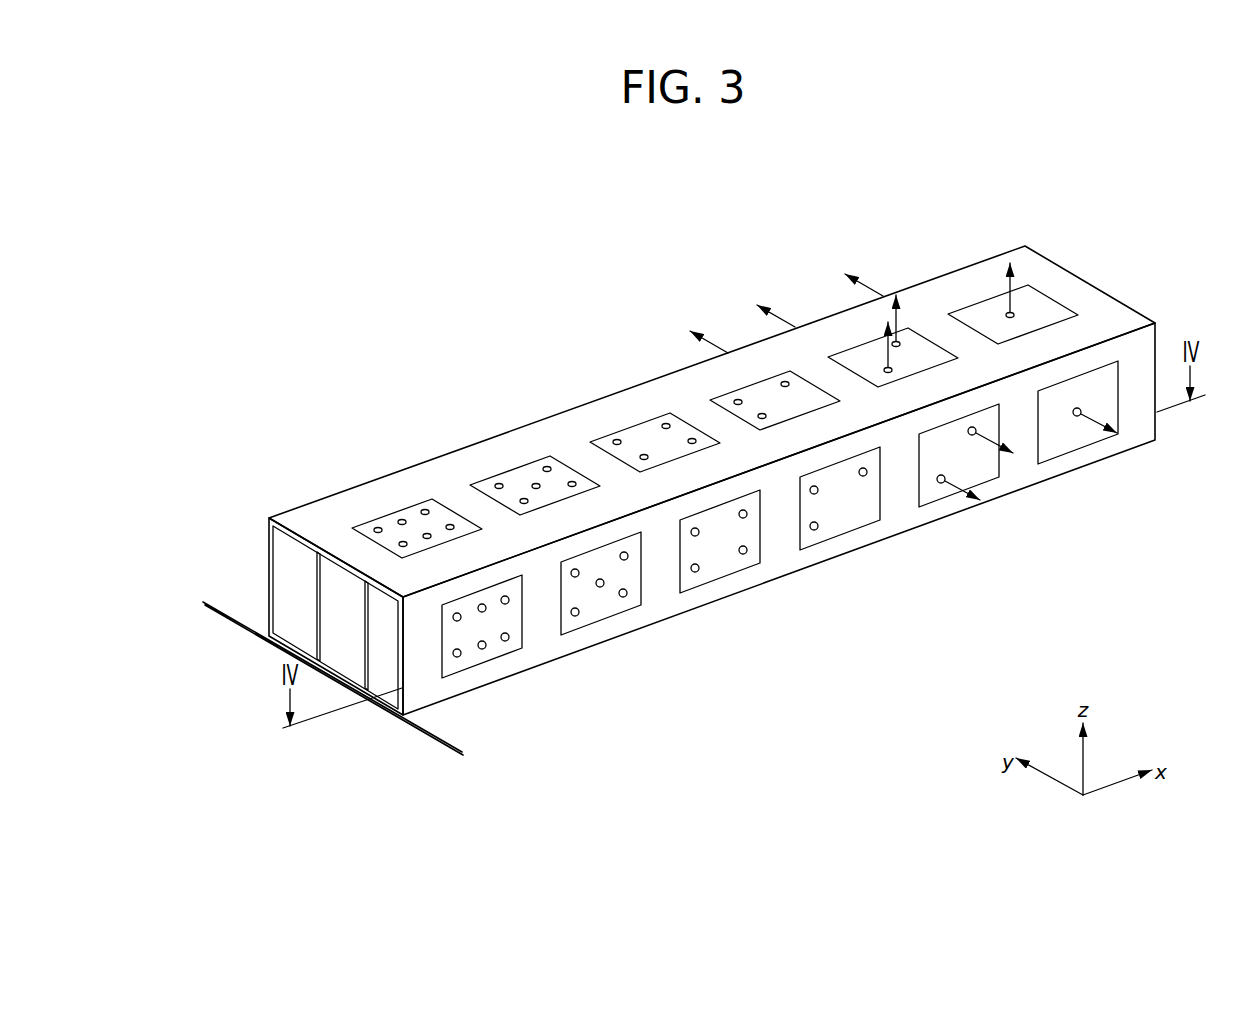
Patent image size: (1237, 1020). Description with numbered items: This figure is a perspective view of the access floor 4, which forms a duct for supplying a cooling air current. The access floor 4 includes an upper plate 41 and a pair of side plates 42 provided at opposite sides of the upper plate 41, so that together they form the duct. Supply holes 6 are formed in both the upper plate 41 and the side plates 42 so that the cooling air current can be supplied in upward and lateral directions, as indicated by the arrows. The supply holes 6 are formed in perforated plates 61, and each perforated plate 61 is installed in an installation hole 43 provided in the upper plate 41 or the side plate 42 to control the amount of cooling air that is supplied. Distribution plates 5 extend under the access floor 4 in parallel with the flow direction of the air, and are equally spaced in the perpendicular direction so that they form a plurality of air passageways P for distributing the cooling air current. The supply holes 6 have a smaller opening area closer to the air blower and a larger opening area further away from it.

The access floor 4 is at (378, 457).
The upper plate 41 is at (318, 526).
The side plate 42 is at (425, 683).
The installation hole 43 is at (727, 571).
The distribution plate 5 is at (377, 637).
The supply hole 6 is at (615, 443).
The perforated plate 61 is at (438, 520).
The air passageway P is at (268, 639).